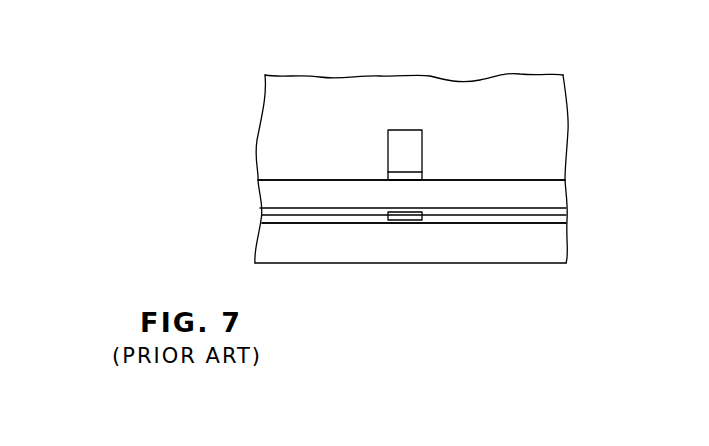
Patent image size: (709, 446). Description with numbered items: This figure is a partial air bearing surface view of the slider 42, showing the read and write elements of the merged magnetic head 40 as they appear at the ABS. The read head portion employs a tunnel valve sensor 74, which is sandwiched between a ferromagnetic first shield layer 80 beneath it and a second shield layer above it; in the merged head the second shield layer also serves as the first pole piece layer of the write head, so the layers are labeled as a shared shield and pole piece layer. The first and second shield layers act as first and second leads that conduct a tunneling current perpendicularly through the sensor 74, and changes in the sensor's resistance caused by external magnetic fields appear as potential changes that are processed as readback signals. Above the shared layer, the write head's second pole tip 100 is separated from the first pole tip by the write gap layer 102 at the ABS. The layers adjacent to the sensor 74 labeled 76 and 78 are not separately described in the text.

The merged magnetic head 40 is at (583, 90).
The slider 42 is at (268, 103).
The second pole tip 100 is at (411, 137).
The write gap layer 102 is at (405, 173).
The first shield layer 80 is at (565, 248).
The tunnel valve sensor 74 is at (405, 220).
The first layer 76 is at (316, 223).
The second layer 78 is at (525, 210).